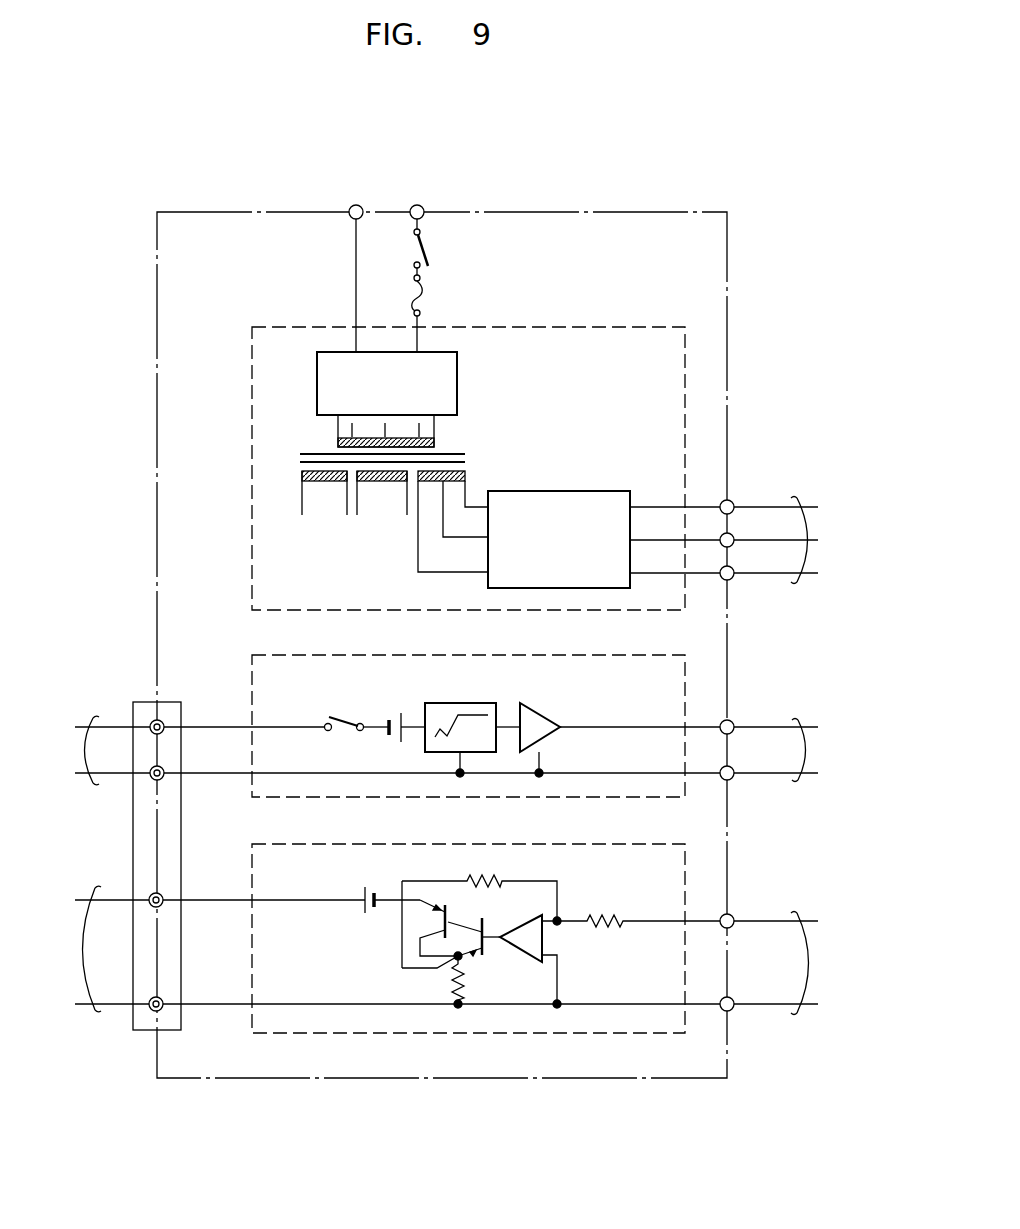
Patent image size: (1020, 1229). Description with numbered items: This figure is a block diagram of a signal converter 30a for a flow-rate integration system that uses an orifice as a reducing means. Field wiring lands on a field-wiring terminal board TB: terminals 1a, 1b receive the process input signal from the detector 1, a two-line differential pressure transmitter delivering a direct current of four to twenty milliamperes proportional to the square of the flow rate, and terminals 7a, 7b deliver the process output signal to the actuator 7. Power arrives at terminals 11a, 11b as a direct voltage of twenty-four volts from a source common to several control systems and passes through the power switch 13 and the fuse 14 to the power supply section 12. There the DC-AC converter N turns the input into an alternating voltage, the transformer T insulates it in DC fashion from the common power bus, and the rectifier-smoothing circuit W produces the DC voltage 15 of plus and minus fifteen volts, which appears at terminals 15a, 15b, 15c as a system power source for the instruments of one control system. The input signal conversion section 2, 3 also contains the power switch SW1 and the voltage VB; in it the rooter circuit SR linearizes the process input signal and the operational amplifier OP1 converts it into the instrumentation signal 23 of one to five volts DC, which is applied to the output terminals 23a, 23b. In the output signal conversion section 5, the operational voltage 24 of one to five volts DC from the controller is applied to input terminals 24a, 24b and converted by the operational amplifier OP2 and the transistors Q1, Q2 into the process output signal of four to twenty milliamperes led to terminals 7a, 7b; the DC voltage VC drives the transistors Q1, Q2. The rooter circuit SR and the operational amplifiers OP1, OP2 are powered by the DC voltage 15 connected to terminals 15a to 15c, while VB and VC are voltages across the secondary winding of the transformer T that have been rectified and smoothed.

The signal converter 30a is at (157, 302).
The power input terminal 11a is at (350, 206).
The power input terminal 11b is at (422, 206).
The power switch 13 is at (432, 248).
The fuse 14 is at (422, 295).
The power supply section 12 is at (298, 328).
The DC-AC converter N is at (458, 370).
The transformer T is at (470, 457).
The rectifier-smoothing circuit W is at (567, 491).
The DC voltage 15 is at (800, 497).
The system power terminal 15a is at (732, 500).
The system power terminal 15b is at (732, 536).
The system power terminal 15c is at (732, 580).
The field-wiring terminal board TB is at (140, 702).
The detector 1 is at (88, 718).
The process input terminal 1a is at (165, 725).
The process input terminal 1b is at (165, 771).
The input signal conversion section 2 is at (509, 707).
The signal processing unit 3 is at (252, 655).
The power switch SW1 is at (334, 716).
The rectified and smoothed voltage VB is at (396, 712).
The rooter circuit SR is at (458, 703).
The operational amplifier OP1 is at (540, 703).
The instrumentation signal 23 is at (804, 718).
The output terminal 23a is at (732, 720).
The output terminal 23b is at (732, 766).
The actuator 7 is at (92, 888).
The process output terminal 7a is at (164, 898).
The process output terminal 7b is at (164, 1002).
The output signal conversion section 5 is at (258, 845).
The transistor driving DC voltage VC is at (366, 886).
The transistor Q1 is at (470, 935).
The transistor Q2 is at (430, 922).
The operational amplifier OP2 is at (522, 953).
The operational signal 24 is at (800, 912).
The input terminal 24a is at (732, 928).
The input terminal 24b is at (732, 1011).